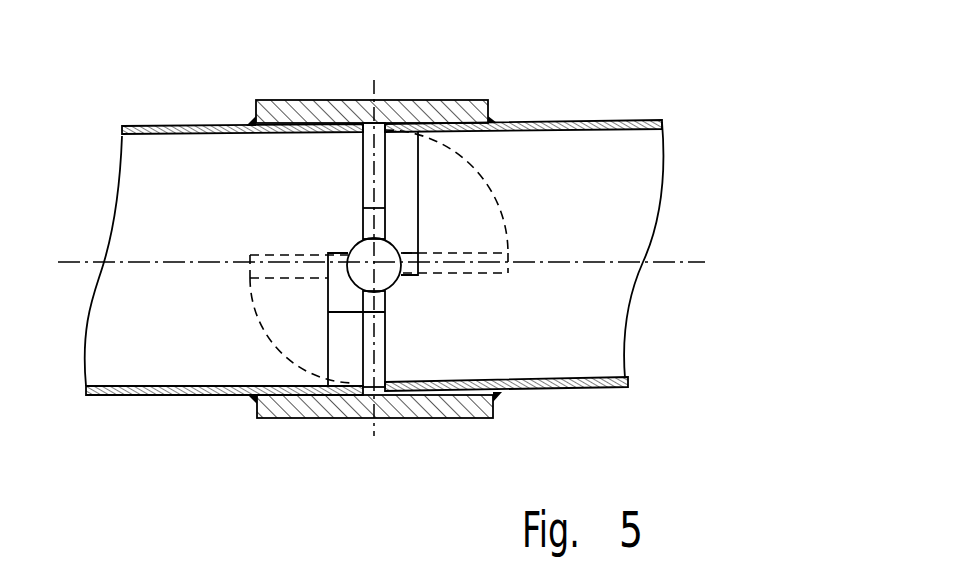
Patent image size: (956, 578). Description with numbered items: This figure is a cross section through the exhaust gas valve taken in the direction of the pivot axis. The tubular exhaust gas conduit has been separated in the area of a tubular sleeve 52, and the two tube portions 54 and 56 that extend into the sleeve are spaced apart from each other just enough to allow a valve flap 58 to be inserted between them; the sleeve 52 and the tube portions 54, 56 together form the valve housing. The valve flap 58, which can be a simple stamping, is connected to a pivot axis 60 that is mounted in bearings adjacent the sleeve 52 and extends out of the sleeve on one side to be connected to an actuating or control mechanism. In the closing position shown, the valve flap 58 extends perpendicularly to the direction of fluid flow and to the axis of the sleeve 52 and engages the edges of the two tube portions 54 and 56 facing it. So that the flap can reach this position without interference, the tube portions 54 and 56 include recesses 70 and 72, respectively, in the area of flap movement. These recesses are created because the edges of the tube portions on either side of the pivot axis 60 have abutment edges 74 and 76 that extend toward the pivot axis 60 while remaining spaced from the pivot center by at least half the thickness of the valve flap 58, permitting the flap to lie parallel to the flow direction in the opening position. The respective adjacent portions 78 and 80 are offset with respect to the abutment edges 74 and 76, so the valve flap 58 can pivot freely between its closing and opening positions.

The tubular sleeve 52 is at (442, 99).
The tube portion 54 is at (88, 340).
The tube portion 56 is at (662, 148).
The valve flap 58 is at (385, 193).
The pivot axis 60 is at (349, 263).
The recess 70 is at (343, 347).
The recess 72 is at (398, 180).
The abutment edge 74 is at (363, 161).
The abutment edge 76 is at (328, 363).
The adjacent portion 78 is at (385, 312).
The adjacent portion 80 is at (418, 208).